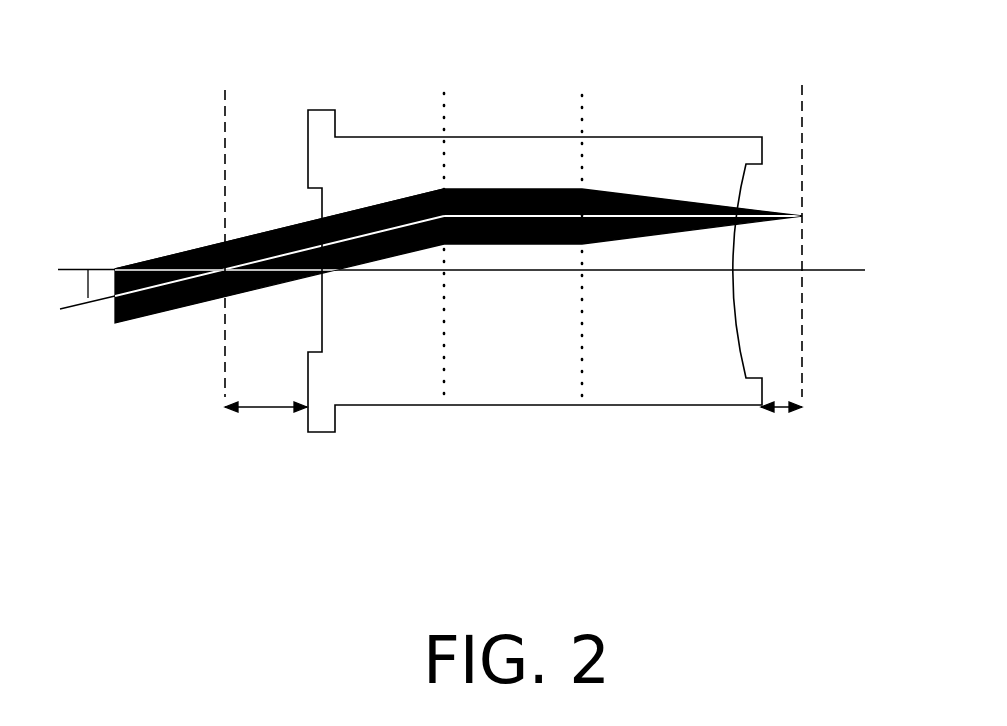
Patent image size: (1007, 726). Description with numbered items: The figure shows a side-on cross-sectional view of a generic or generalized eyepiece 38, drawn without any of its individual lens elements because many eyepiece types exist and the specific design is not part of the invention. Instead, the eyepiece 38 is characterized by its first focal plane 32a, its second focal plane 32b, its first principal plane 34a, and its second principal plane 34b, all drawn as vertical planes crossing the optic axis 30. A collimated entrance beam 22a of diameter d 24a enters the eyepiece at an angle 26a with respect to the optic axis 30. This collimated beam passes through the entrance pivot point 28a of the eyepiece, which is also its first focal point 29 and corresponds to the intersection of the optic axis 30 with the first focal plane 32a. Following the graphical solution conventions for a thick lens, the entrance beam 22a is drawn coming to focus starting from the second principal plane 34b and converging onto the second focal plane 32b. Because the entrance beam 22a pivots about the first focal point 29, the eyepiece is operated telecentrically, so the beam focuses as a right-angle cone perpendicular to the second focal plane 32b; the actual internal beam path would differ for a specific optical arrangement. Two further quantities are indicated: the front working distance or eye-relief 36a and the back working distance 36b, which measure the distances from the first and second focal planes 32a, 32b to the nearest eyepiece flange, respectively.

The collimated entrance beam 22a is at (150, 315).
The diameter d 24a is at (177, 249).
The angle θ 26a is at (58, 269).
The entrance pivot point 28a is at (212, 250).
The first focal point 29 is at (212, 250).
The optic axis 30 is at (865, 270).
The first focal plane 32a is at (225, 90).
The second focal plane 32b is at (802, 85).
The first principal plane 34a is at (444, 85).
The second principal plane 34b is at (582, 83).
The front working distance 36a is at (262, 407).
The back working distance 36b is at (782, 407).
The eyepiece 38 is at (490, 406).
The diameter d is at (189, 313).